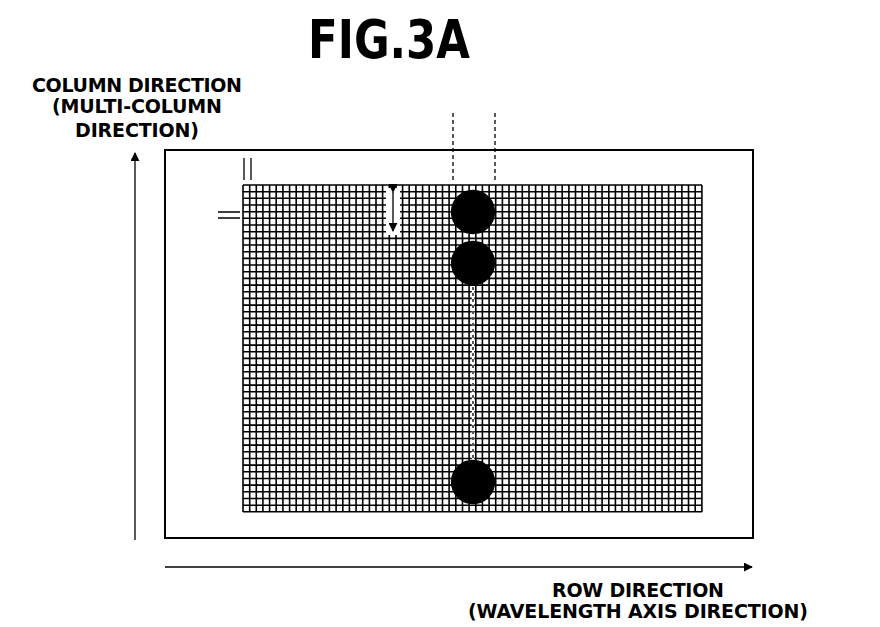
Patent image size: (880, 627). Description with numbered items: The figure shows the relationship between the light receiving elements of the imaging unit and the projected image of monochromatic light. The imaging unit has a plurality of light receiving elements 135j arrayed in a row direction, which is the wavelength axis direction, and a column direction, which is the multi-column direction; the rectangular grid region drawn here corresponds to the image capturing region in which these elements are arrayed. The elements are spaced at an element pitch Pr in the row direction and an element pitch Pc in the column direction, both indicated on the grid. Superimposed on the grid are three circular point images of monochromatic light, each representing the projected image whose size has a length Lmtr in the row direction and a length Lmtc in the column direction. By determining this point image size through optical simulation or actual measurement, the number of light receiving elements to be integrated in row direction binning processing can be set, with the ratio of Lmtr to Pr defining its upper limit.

The light receiving element 135j is at (667, 359).
The length in the row direction Lmtr is at (456, 123).
The length in the column direction Lmtc is at (363, 211).
The element pitch in the row direction Pr is at (287, 168).
The element pitch in the column direction Pc is at (228, 180).